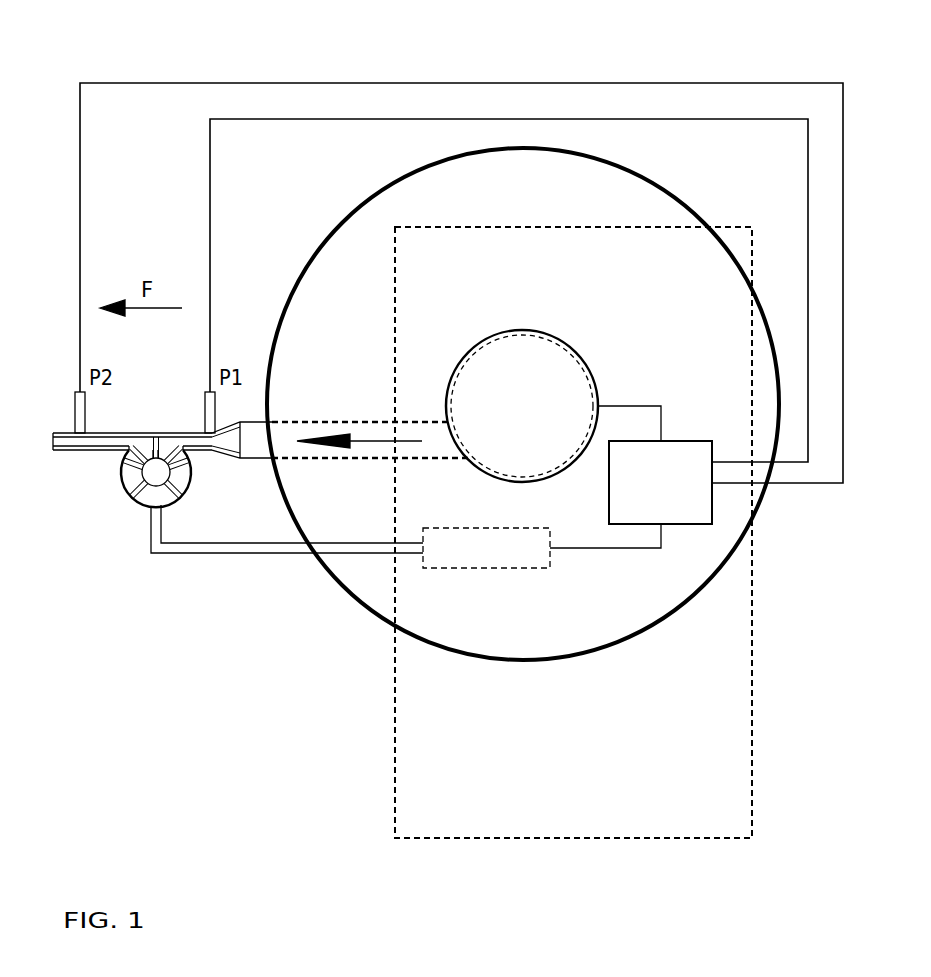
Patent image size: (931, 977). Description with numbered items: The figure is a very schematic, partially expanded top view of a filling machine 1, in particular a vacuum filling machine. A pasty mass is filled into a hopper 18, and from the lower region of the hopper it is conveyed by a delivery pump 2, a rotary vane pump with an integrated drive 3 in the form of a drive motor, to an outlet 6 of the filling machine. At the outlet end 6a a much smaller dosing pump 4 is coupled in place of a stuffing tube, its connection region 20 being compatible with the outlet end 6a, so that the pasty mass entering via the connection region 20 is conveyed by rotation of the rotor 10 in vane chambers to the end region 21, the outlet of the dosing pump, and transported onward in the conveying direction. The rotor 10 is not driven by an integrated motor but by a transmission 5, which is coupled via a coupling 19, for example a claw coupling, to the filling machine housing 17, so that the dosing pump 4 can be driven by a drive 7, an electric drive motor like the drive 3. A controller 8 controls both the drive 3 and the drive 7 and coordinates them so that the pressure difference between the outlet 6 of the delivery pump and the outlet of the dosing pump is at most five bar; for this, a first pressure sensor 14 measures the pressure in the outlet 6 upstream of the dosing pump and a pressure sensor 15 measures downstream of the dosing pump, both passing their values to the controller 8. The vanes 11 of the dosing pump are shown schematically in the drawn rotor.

The filling machine 1 is at (608, 58).
The delivery pump 2 is at (522, 330).
The drive 3 is at (495, 387).
The dosing pump 4 is at (122, 480).
The transmission 5 is at (184, 554).
The outlet 6 is at (237, 456).
The outlet end 6a is at (210, 454).
The drive 7 is at (531, 568).
The controller 8 is at (700, 441).
The rotor 10 is at (162, 480).
The impeller blade 11 is at (138, 493).
The first pressure sensor 14 is at (205, 407).
The pressure sensor 15 is at (75, 408).
The filling machine housing 17 is at (752, 698).
The hopper 18 is at (682, 199).
The coupling 19 is at (395, 551).
The connection region 20 is at (160, 433).
The end region 21 is at (60, 451).